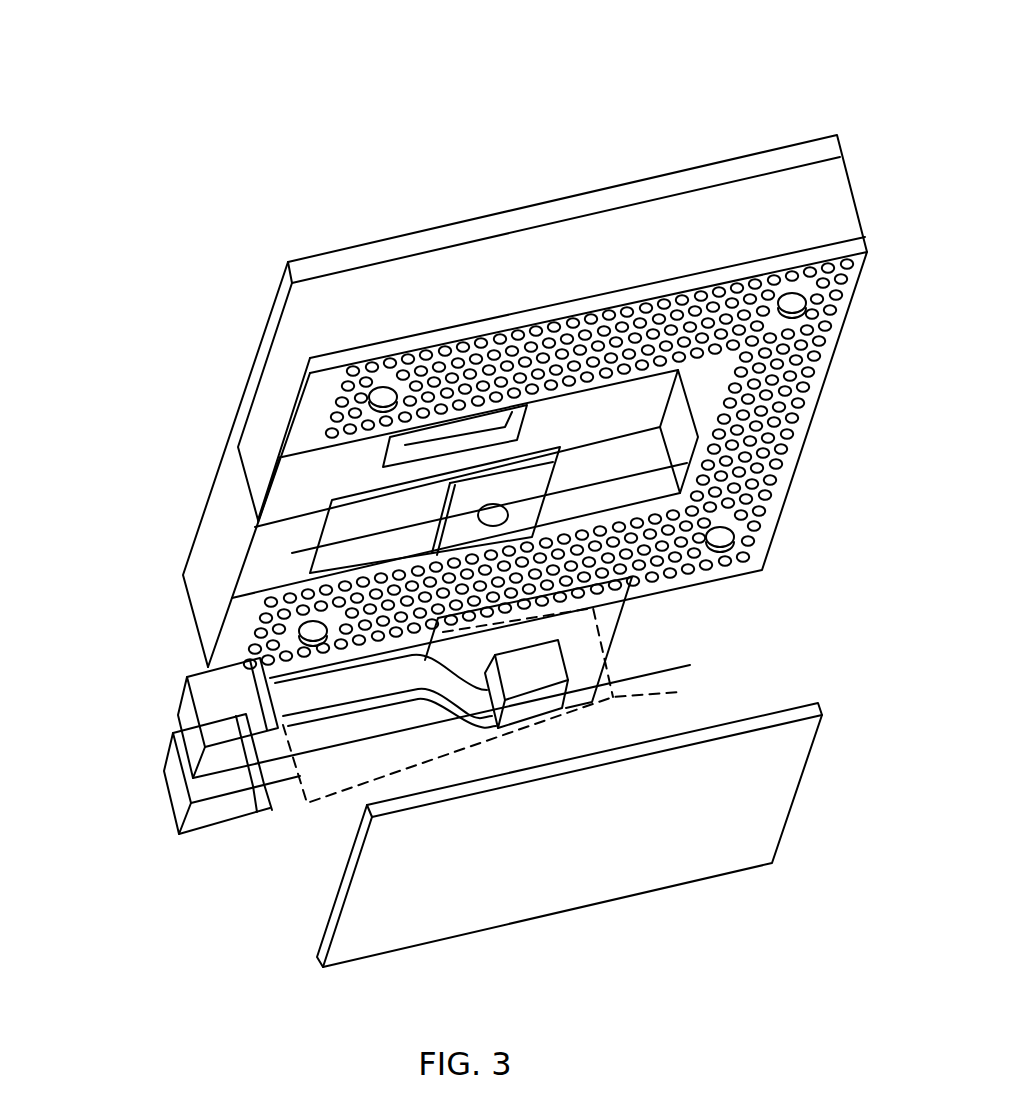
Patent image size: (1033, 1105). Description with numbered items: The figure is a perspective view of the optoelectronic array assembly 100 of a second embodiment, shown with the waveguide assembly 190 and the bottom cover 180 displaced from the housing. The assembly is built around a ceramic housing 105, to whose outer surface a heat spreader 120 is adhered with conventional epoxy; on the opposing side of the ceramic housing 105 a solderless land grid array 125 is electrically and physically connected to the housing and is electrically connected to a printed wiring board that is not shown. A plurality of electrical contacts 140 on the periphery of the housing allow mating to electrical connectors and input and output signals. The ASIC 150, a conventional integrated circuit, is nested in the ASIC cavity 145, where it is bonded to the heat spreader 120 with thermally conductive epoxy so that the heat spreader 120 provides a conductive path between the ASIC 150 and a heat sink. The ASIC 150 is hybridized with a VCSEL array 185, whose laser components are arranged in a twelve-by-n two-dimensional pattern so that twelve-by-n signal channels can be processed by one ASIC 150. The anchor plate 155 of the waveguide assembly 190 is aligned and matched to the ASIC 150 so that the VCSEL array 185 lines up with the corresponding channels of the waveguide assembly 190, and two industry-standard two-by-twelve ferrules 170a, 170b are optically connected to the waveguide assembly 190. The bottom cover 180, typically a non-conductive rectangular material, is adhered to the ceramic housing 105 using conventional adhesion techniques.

The optoelectronic array assembly 100 is at (296, 76).
The ceramic housing 105 is at (323, 312).
The heat spreader 120 is at (528, 213).
The solderless land grid array (LGA) 125 is at (737, 267).
The electrical contacts 140 is at (745, 466).
The ASIC cavity 145 is at (384, 465).
The ASIC 150 is at (442, 518).
The anchor plate 155 is at (612, 622).
The 2×12 ferrule 170a is at (213, 680).
The 2×12 ferrule 170b is at (178, 790).
The bottom cover 180 is at (768, 813).
The VCSEL array 185 is at (500, 514).
The waveguide assembly 190 is at (682, 691).